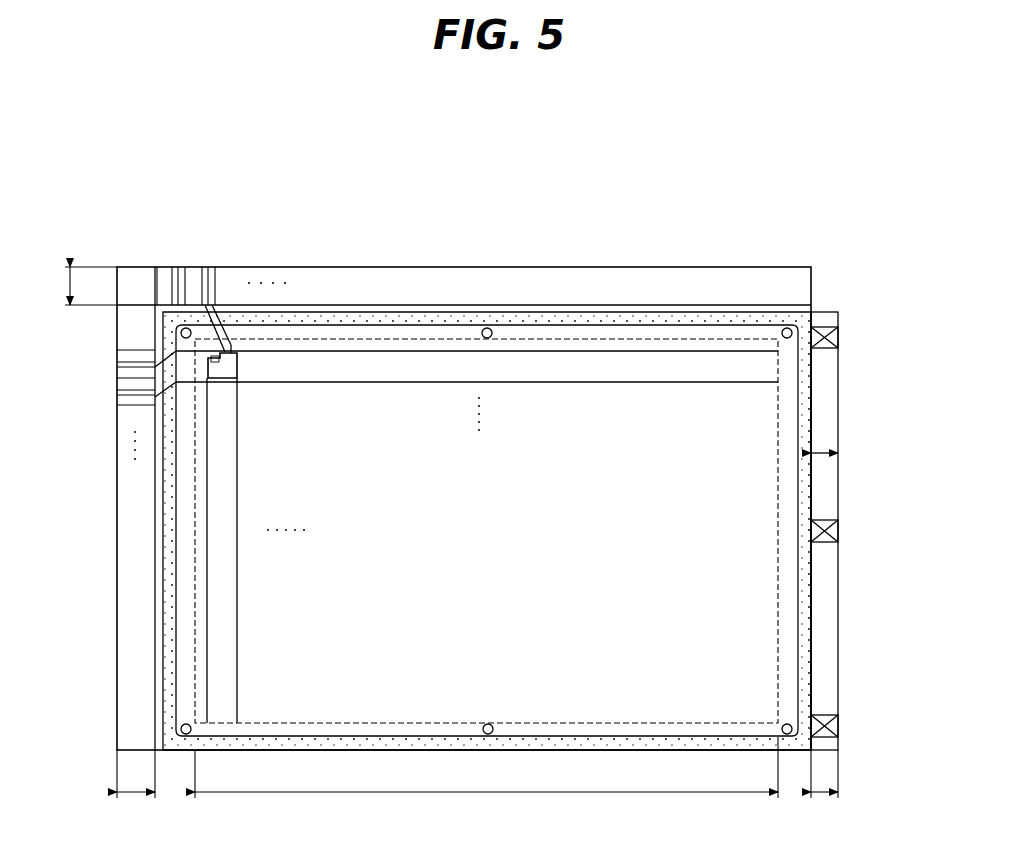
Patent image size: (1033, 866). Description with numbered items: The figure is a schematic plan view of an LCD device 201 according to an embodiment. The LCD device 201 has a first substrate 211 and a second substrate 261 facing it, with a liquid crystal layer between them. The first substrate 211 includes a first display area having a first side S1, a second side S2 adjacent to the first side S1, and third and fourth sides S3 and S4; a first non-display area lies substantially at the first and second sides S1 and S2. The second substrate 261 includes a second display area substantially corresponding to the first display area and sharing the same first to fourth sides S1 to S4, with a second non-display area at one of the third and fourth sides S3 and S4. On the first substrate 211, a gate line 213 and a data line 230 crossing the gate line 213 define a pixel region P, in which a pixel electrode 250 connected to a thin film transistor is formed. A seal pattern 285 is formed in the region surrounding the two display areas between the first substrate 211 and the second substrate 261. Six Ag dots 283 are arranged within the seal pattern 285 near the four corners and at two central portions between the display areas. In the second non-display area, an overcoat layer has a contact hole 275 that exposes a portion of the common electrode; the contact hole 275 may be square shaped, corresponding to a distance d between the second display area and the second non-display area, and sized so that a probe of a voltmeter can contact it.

The LCD device 201 is at (810, 230).
The first substrate 211 is at (644, 263).
The gate line 213 is at (557, 383).
The data line 230 is at (239, 488).
The pixel electrode 250 is at (243, 369).
The second substrate 261 is at (551, 497).
The contact hole 275 is at (842, 331).
The Ag dot 283 is at (790, 328).
The seal pattern 285 is at (808, 588).
The pixel region P is at (233, 350).
The first side S1 is at (441, 334).
The second side S2 is at (190, 580).
The third side S3 is at (440, 728).
The fourth side S4 is at (783, 507).
The distance d is at (839, 450).